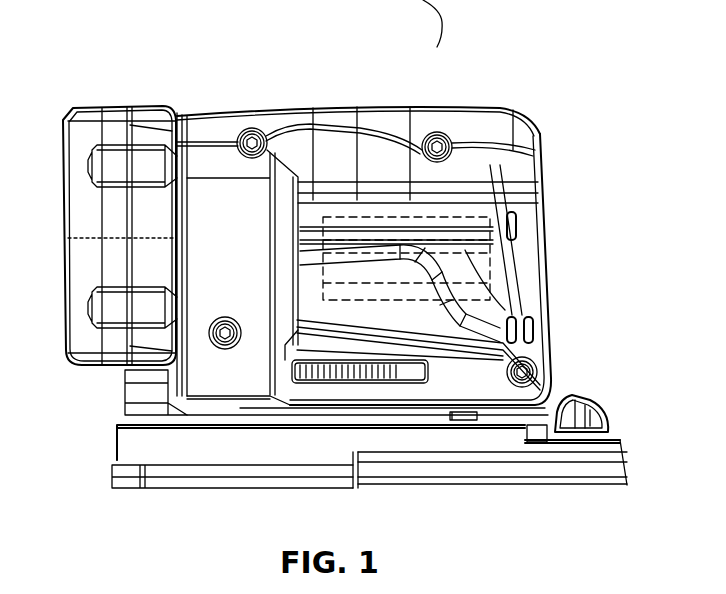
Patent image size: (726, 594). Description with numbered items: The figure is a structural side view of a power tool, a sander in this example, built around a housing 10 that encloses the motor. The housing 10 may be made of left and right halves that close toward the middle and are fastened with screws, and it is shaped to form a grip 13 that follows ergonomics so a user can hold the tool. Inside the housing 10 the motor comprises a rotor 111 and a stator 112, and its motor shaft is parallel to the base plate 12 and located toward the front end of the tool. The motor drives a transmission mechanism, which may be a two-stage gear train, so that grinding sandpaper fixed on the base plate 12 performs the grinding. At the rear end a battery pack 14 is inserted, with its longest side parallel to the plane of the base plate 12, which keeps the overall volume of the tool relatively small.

The housing 10 is at (240, 213).
The base plate 12 is at (125, 455).
The grip 13 is at (340, 120).
The battery pack 14 is at (88, 106).
The rotor 111 is at (443, 210).
The stator 112 is at (534, 325).